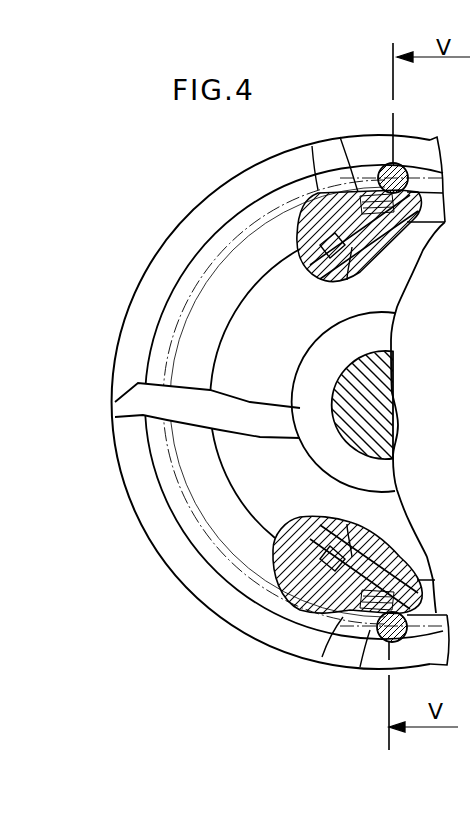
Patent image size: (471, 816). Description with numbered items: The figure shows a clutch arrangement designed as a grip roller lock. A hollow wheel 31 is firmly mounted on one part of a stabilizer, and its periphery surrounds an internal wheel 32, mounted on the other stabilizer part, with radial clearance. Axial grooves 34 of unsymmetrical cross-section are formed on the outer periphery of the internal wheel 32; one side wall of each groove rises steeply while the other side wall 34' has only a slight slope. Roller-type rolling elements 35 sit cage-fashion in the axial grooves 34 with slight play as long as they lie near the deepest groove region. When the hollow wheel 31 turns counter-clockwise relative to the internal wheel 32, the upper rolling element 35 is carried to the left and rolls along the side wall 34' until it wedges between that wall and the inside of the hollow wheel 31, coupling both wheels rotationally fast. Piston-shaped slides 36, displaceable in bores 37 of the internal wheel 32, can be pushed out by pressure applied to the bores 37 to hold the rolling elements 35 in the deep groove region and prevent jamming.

The hollow wheel 31 is at (226, 196).
The internal wheel 32 is at (210, 295).
The axial groove 34 is at (389, 402).
The side wall 34' is at (365, 390).
The rolling element 35 is at (366, 165).
The piston-shaped slide 36 is at (312, 150).
The bore 37 is at (340, 278).